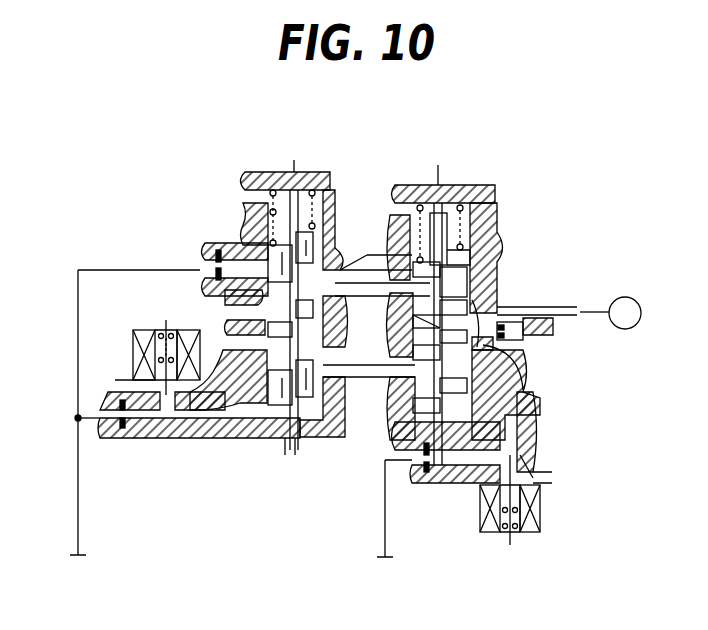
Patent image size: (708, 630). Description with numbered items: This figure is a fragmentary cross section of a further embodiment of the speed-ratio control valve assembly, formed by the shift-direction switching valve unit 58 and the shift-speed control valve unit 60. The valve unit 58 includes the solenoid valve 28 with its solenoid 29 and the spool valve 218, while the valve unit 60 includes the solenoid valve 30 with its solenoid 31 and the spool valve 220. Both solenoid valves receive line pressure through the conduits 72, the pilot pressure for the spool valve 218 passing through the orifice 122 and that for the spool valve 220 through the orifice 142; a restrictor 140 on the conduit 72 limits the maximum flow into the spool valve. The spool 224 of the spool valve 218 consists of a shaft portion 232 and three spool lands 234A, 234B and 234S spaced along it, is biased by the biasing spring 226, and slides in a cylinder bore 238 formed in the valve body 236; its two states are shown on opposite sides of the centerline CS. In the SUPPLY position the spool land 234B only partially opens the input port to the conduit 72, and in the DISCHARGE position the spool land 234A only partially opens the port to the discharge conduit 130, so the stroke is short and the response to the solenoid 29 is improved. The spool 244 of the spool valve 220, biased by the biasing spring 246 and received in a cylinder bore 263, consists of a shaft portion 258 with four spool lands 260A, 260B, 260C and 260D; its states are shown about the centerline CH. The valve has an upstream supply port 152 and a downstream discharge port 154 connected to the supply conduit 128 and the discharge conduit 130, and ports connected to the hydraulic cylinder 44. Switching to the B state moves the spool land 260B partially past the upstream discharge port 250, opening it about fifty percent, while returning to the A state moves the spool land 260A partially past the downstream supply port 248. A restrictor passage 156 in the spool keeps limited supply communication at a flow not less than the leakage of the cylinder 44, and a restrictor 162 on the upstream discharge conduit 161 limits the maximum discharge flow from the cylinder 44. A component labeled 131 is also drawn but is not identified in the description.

The shift-direction switching valve unit 58 is at (137, 199).
The shift-speed control valve unit 60 is at (548, 213).
The biasing spring 226 is at (272, 172).
The cylinder bore 238 is at (258, 178).
The valve body 236 is at (250, 205).
The spool land 234B is at (248, 248).
The restrictor 140 is at (200, 247).
The spool land 234S is at (224, 316).
The centerline CS is at (295, 292).
The bearing housing 131 is at (232, 335).
The shaft portion 232 is at (233, 370).
The orifice 122 is at (126, 426).
The solenoid valve 28 is at (126, 340).
The solenoid 29 is at (145, 333).
The spool 224 is at (296, 440).
The spool valve 218 is at (313, 448).
The spool land 234A is at (258, 440).
The conduits 72 is at (78, 515).
The supply conduit 128 is at (362, 270).
The upstream supply port 152 is at (372, 300).
The discharge conduit 130 is at (362, 378).
The downstream discharge port 154 is at (378, 395).
The spool valve 220 is at (410, 183).
The centerline CH is at (440, 296).
The spool 244 is at (450, 190).
The biasing spring 246 is at (458, 198).
The cylinder bore 263 is at (482, 193).
The spool land 260D is at (482, 262).
The restrictor passage 156 is at (495, 266).
The downstream supply port 248 is at (485, 297).
The spool land 260A is at (500, 312).
The hydraulic cylinder 44 is at (625, 298).
The upstream discharge conduit 161 is at (553, 328).
The restrictor 162 is at (545, 340).
The upstream discharge port 250 is at (505, 360).
The spool land 260B is at (522, 398).
The spool land 260C is at (515, 420).
The shaft portion 258 is at (420, 430).
The orifice 142 is at (412, 470).
The solenoid valve 30 is at (545, 516).
The solenoid 31 is at (532, 533).